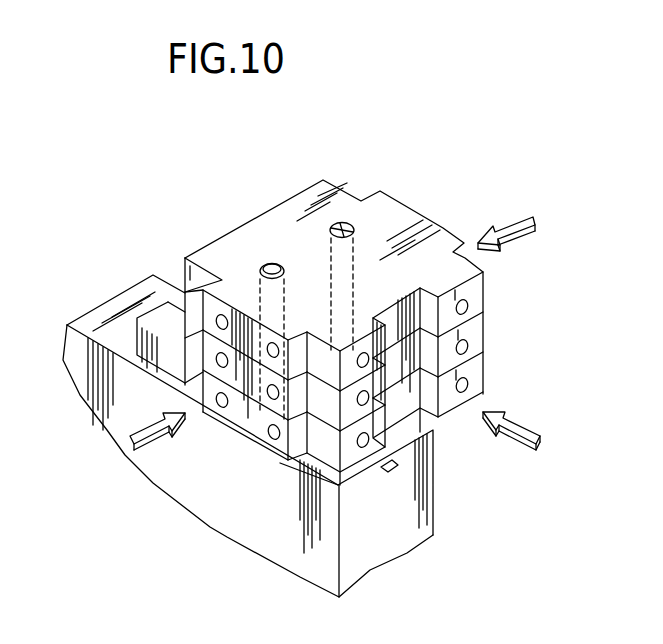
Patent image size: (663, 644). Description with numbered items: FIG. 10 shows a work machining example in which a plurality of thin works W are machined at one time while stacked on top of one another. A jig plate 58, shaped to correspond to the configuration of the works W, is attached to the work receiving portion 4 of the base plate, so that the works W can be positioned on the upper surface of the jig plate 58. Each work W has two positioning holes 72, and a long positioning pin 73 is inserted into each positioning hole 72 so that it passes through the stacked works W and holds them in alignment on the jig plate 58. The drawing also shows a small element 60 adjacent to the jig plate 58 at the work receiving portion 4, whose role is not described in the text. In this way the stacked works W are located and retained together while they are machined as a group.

The work receiving portion 4 is at (197, 457).
The jig plate 58 is at (427, 423).
The stopper tab 60 is at (398, 465).
The positioning hole 72 is at (346, 224).
The positioning pin 73 is at (336, 227).
The work W is at (483, 373).